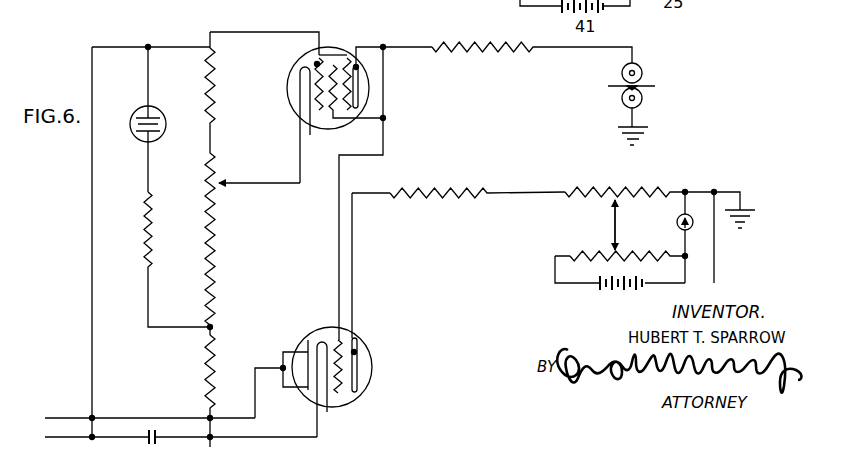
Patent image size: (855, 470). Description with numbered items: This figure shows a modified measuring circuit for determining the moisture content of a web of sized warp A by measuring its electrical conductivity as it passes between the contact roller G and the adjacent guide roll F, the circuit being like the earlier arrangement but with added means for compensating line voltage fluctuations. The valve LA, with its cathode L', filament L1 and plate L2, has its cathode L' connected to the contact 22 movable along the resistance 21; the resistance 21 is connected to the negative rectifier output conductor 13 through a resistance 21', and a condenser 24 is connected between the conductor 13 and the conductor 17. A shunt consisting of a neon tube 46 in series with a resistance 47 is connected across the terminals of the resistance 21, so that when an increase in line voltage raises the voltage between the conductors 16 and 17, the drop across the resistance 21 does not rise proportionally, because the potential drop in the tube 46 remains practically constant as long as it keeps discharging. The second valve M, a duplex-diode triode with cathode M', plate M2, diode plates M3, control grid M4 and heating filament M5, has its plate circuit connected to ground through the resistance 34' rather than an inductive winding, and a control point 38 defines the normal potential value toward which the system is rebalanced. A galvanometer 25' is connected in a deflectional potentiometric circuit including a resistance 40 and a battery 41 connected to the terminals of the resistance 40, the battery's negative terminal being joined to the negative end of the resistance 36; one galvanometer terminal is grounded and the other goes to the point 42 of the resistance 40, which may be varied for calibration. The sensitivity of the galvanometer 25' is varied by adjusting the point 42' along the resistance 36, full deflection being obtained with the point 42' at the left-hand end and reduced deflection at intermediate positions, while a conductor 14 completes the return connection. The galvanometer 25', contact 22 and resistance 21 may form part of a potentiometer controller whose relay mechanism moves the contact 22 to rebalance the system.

The conductor 17 is at (50, 436).
The conductor 16 is at (70, 406).
The condenser 24 is at (153, 430).
The negative rectifier output conductor 13 is at (213, 440).
The neon tube 46 is at (165, 129).
The resistance 47 is at (154, 233).
The resistance 21 is at (227, 191).
The contact 22 is at (220, 188).
The resistance 21' is at (188, 371).
The valve LA is at (366, 96).
The cathode L' is at (286, 125).
The filament of tube LA L1 is at (316, 62).
The plate L2 is at (355, 64).
The control point 38 is at (385, 46).
The contact roller G is at (640, 68).
The warp A is at (653, 86).
The guide roll F is at (640, 90).
The resistance 34' is at (458, 247).
The resistance 36 is at (588, 190).
The point 42' is at (594, 225).
The point 42 is at (620, 230).
The resistance 40 is at (571, 255).
The battery 41 is at (601, 291).
The galvanometer 25' is at (696, 237).
The conductor 14 is at (715, 252).
The valve M is at (344, 367).
The diode plates M3 is at (306, 348).
The cathode M' is at (305, 370).
The tube heating filament M5 is at (331, 340).
The control grid M4 is at (336, 395).
The plate M2 is at (357, 352).